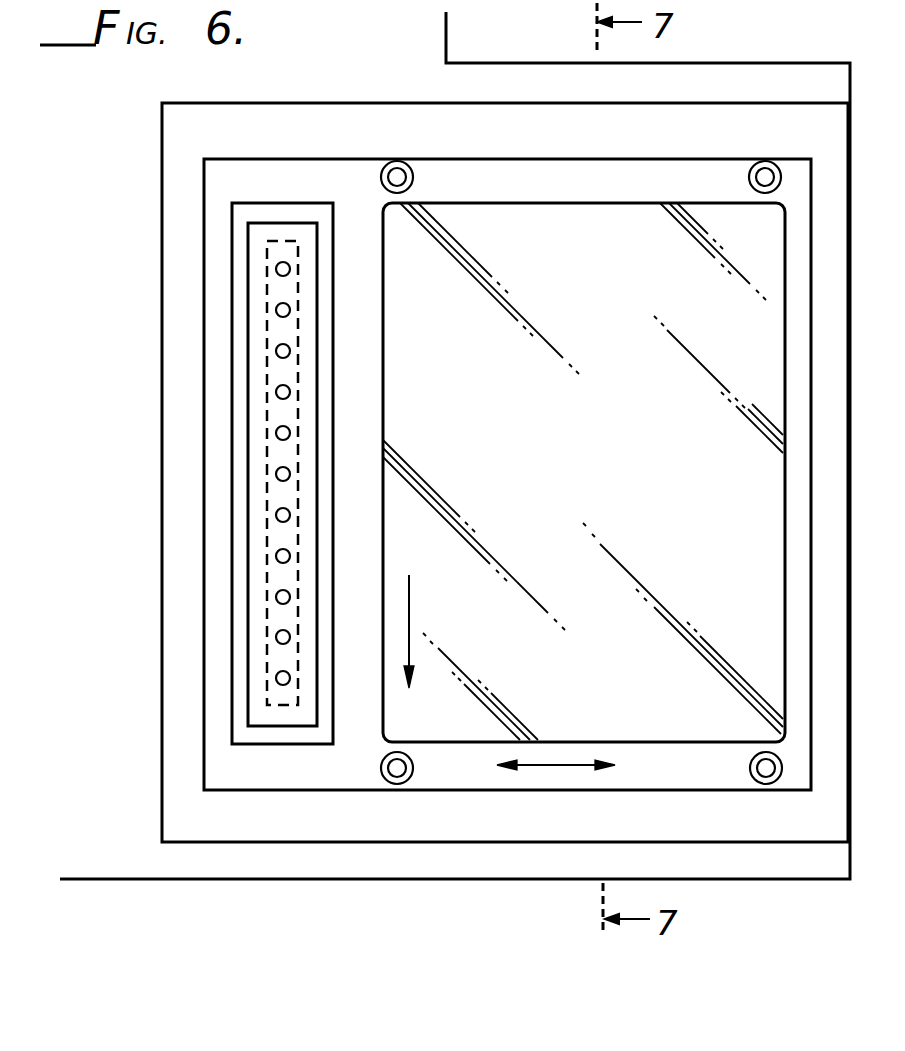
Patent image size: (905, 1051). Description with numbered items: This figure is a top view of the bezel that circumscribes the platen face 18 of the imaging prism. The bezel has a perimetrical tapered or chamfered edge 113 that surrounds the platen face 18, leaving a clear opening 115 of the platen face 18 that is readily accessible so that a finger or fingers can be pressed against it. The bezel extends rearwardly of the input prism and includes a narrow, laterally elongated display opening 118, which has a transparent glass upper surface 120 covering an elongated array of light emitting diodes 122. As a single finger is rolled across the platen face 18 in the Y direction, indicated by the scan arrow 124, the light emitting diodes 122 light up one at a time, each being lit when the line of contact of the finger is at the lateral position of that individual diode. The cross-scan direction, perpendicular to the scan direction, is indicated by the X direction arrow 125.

The chamfered edge 113 is at (190, 130).
The display opening 118 is at (242, 519).
The transparent glass upper surface 120 is at (257, 285).
The light emitting diodes 122 is at (272, 452).
The platen face 18 is at (572, 472).
The clear opening 115 is at (628, 742).
The Y direction scan arrow 124 is at (409, 606).
The X direction arrow 125 is at (558, 765).